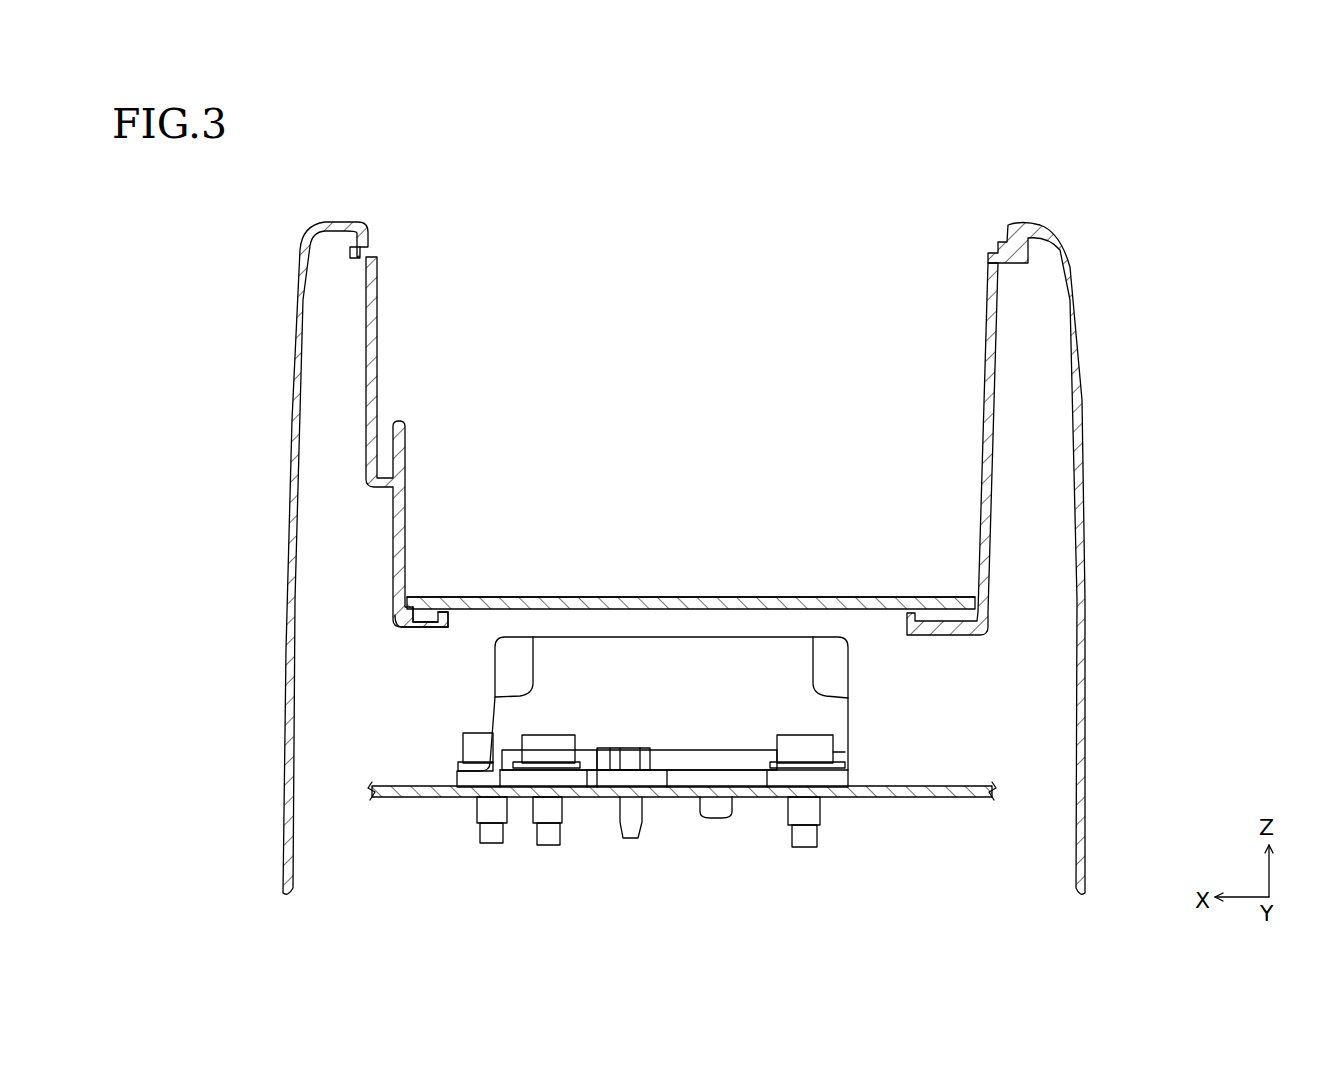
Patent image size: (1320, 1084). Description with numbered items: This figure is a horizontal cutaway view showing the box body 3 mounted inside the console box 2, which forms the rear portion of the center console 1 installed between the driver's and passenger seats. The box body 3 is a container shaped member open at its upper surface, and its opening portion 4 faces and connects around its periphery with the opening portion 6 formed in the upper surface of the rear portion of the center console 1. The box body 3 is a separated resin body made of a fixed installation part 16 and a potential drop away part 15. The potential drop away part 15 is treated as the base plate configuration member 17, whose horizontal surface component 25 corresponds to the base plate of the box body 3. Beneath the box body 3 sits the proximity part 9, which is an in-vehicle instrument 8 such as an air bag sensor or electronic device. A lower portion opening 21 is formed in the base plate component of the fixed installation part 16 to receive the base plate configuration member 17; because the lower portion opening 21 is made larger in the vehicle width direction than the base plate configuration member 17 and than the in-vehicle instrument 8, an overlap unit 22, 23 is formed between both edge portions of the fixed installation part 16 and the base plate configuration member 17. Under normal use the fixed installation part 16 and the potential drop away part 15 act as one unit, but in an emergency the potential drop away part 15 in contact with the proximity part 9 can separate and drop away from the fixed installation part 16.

The center console 1 is at (1089, 352).
The console box 2 is at (750, 511).
The box body 3 is at (831, 449).
The opening portion 4 is at (418, 391).
The opening portion 6 is at (375, 227).
The in-vehicle instrument 8 is at (770, 742).
The proximity part 9 is at (848, 718).
The potential drop away part 15 is at (810, 577).
The fixed installation part 16 is at (996, 502).
The base plate configuration member 17 is at (878, 594).
The lower portion opening 21 is at (455, 627).
The overlap unit 22 is at (427, 630).
The overlap unit 23 is at (437, 627).
The horizontal surface component 25 is at (712, 597).